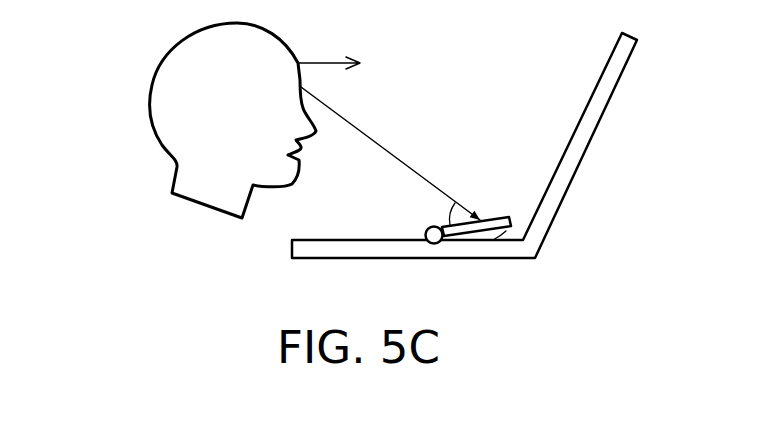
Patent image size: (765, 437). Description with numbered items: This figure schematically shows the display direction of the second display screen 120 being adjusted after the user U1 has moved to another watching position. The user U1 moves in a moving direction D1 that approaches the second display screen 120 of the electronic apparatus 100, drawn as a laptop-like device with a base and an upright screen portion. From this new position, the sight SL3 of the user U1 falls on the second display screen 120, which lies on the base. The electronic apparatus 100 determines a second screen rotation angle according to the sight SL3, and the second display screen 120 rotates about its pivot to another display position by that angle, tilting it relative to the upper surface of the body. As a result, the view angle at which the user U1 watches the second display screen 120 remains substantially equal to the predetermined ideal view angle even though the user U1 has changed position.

The user U1 is at (158, 66).
The moving direction D1 is at (328, 63).
The sight SL3 is at (377, 142).
The electronic apparatus 100 is at (622, 55).
The second display screen 120 is at (512, 216).